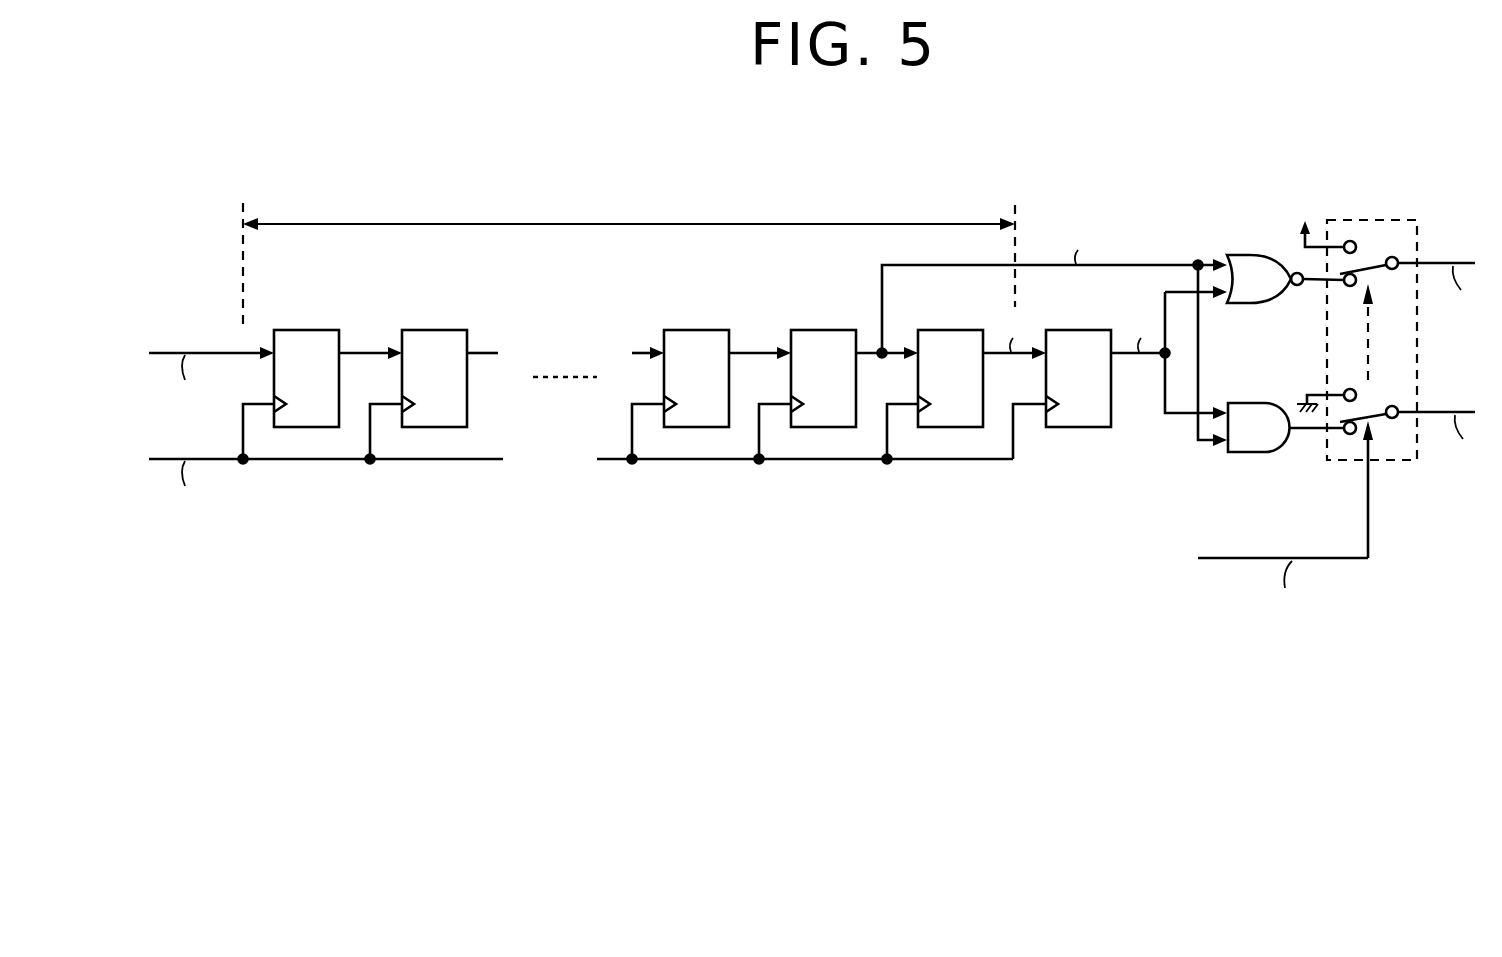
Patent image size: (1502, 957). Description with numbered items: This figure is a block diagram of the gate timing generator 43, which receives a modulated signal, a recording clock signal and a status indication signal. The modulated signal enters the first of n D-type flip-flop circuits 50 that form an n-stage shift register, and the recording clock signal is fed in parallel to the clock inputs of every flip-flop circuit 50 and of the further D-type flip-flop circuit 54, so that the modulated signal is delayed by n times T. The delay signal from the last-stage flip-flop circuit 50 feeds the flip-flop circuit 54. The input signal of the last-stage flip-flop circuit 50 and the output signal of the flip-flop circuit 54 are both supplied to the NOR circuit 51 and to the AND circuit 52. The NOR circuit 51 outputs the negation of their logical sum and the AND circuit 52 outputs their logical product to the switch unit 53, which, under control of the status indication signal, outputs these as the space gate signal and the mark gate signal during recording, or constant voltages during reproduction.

The gate timing generator 43 is at (700, 545).
The D-type flip-flop circuit 50 is at (315, 332).
The D-type flip-flop circuit 54 is at (1063, 332).
The NOR circuit 51 is at (1250, 254).
The AND circuit 52 is at (1250, 453).
The switch unit 53 is at (1400, 462).